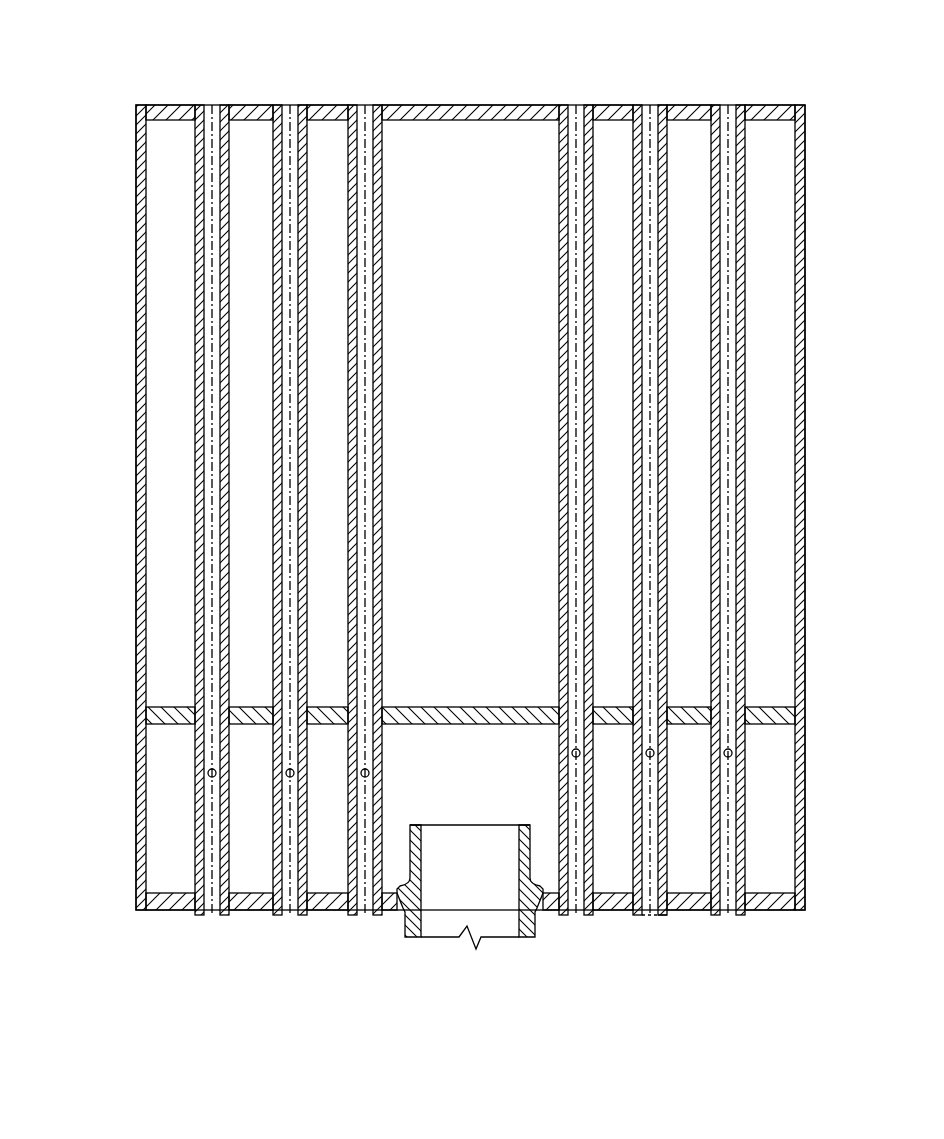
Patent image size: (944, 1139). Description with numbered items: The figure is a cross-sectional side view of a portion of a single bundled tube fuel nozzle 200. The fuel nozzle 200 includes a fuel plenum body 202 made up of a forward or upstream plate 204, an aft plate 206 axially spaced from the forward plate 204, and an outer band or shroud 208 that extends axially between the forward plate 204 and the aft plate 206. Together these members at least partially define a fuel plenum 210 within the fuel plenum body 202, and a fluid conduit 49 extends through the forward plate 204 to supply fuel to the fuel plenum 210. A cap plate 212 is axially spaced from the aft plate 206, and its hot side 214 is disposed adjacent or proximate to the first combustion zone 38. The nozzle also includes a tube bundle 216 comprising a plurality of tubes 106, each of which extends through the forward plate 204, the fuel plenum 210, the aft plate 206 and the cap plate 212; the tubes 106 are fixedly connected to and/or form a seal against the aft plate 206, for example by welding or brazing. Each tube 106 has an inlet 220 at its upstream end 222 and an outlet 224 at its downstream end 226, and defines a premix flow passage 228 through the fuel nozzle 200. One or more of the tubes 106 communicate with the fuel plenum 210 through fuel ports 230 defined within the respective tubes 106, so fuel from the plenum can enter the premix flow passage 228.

The first combustion zone 38 is at (454, 46).
The fluid conduit 49 is at (538, 932).
The tubes 106 is at (195, 332).
The bundled tube fuel nozzle 200 is at (84, 131).
The fuel plenum body 202 is at (820, 792).
The forward plate 204 is at (758, 912).
The aft plate 206 is at (773, 715).
The outer band 208 is at (797, 852).
The fuel plenum 210 is at (479, 807).
The cap plate 212 is at (796, 116).
The hot side 214 is at (775, 110).
The tube bundle 216 is at (176, 378).
The inlet 220 is at (656, 914).
The upstream end 222 is at (640, 920).
The outlet 224 is at (647, 106).
The downstream end 226 is at (670, 97).
The premix flow passage 228 is at (648, 490).
The fuel ports 230 is at (652, 757).